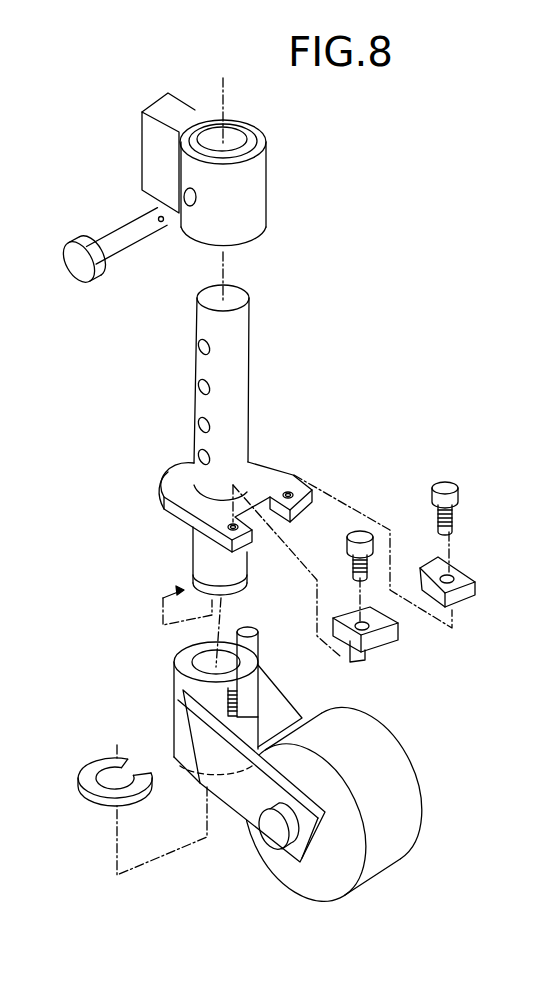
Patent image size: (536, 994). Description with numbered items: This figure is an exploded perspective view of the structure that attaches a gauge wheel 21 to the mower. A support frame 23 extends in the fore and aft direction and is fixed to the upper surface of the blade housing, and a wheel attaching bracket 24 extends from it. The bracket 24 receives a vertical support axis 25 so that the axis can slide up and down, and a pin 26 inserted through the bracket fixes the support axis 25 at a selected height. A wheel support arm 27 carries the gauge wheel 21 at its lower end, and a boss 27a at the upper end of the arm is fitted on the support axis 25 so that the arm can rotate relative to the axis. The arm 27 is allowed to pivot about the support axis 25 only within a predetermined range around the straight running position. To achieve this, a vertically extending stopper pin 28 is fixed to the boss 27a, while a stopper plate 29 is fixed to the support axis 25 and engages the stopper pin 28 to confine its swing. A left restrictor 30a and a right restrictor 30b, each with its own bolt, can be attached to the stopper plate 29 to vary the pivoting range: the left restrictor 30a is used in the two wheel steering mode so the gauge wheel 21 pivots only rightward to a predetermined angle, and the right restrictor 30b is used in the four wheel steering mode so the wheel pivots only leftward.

The gauge wheel 21 is at (393, 863).
The mounting block 23 is at (148, 154).
The wheel attaching bracket 24 is at (260, 208).
The support axis 25 is at (240, 367).
The pin 26 is at (98, 271).
The wheel support arm 27 is at (243, 805).
The boss 27a is at (175, 678).
The stopper pin 28 is at (262, 640).
The stopper plate 29 is at (270, 482).
The left restrictor 30a is at (352, 641).
The right restrictor 30b is at (460, 603).